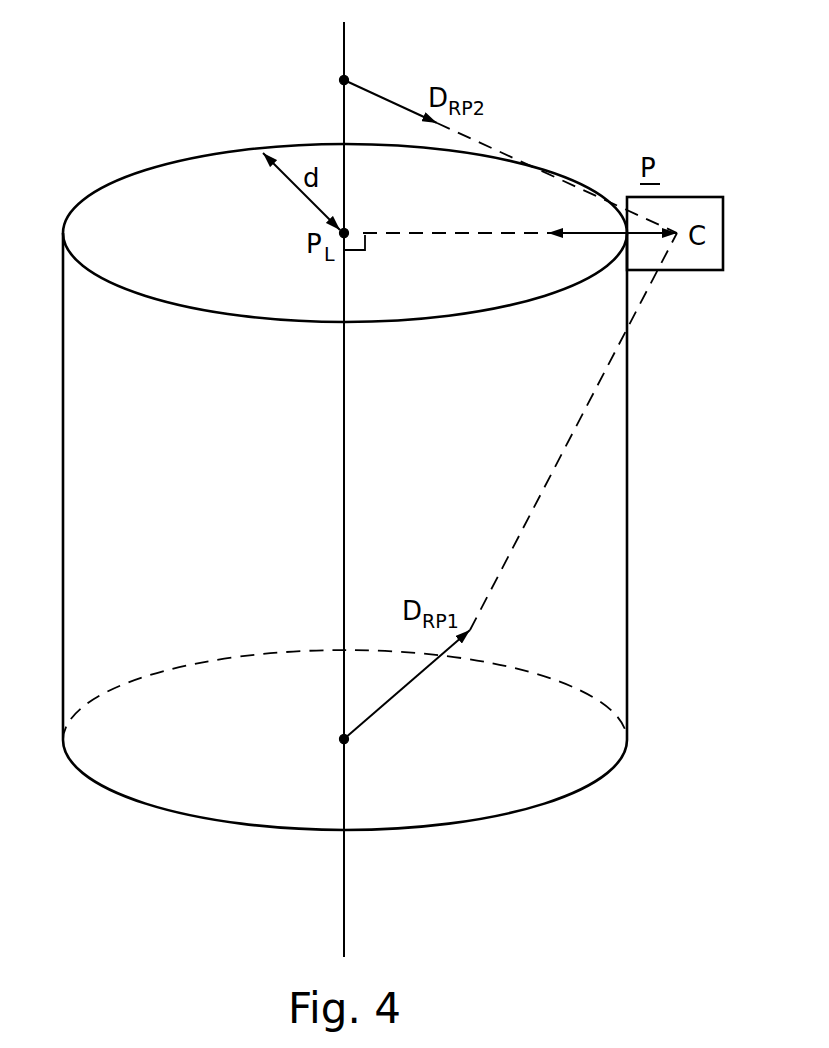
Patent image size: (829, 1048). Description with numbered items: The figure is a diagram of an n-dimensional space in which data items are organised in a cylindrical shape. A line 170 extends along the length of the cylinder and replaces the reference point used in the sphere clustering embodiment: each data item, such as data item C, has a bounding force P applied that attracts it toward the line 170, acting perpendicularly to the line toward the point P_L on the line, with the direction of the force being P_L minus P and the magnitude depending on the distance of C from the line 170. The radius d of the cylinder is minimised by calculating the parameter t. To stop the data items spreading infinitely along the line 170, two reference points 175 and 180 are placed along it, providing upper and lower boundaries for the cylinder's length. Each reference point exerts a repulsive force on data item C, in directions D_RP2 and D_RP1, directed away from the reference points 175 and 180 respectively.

The line 170 is at (344, 928).
The reference point 175 is at (350, 78).
The reference point 180 is at (338, 742).